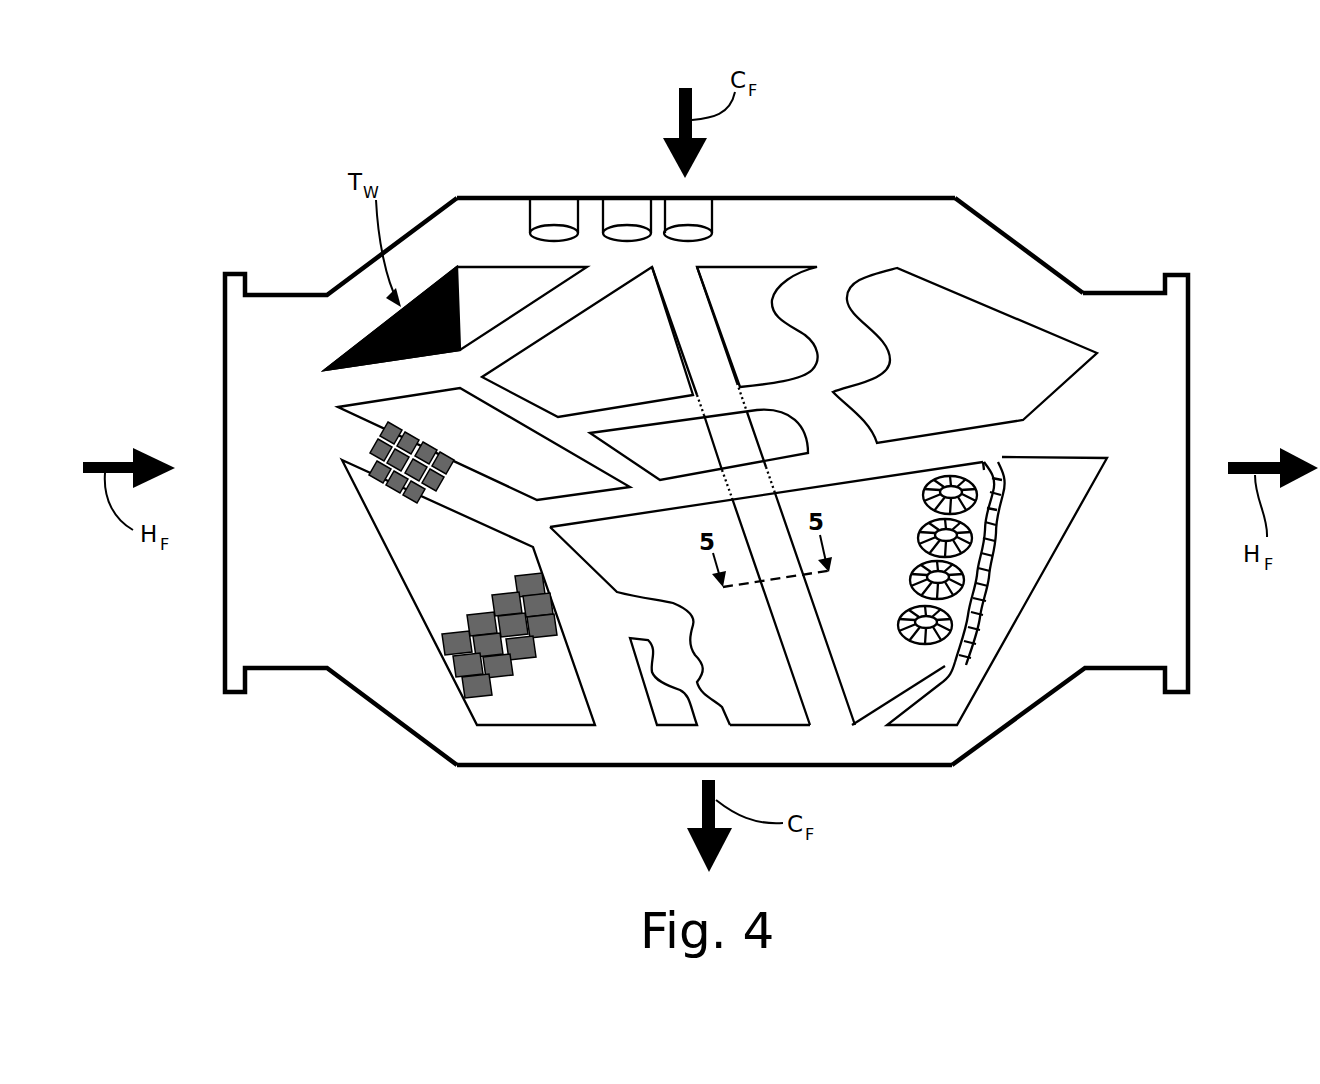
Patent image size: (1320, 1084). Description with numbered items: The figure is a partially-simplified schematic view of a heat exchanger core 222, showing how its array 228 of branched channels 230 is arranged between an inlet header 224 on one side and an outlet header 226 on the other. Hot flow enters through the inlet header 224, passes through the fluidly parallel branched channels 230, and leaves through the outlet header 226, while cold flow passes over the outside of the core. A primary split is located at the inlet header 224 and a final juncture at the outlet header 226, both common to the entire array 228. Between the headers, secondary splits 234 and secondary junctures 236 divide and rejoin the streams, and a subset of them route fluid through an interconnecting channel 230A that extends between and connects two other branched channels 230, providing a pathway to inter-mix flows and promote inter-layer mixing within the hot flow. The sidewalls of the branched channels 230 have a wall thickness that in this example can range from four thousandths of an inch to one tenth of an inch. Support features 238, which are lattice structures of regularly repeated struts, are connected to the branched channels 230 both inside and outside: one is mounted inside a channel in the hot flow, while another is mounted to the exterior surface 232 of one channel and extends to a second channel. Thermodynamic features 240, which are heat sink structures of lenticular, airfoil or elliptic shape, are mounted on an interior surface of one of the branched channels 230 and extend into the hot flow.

The core 222 is at (997, 133).
The inlet header 224 is at (230, 272).
The outlet header 226 is at (1178, 273).
The array 228 is at (1020, 238).
The branched channels 230 is at (700, 683).
The interconnecting channel 230A is at (688, 315).
The exterior surface 232 is at (990, 312).
The splits 234 is at (460, 392).
The junctures 236 is at (885, 430).
The support features 238 is at (370, 445).
The thermodynamic features 240 is at (530, 215).